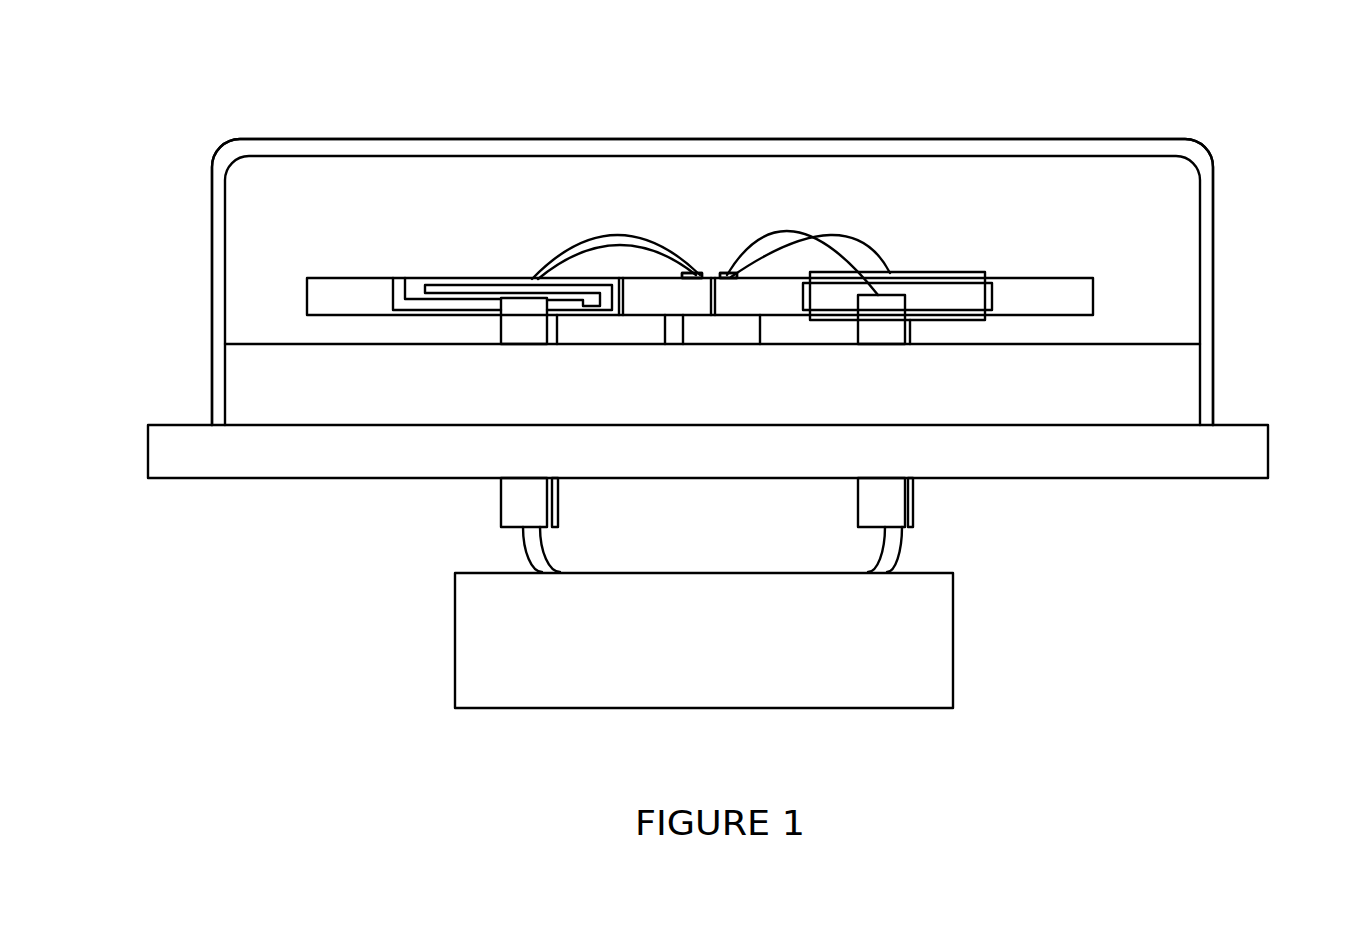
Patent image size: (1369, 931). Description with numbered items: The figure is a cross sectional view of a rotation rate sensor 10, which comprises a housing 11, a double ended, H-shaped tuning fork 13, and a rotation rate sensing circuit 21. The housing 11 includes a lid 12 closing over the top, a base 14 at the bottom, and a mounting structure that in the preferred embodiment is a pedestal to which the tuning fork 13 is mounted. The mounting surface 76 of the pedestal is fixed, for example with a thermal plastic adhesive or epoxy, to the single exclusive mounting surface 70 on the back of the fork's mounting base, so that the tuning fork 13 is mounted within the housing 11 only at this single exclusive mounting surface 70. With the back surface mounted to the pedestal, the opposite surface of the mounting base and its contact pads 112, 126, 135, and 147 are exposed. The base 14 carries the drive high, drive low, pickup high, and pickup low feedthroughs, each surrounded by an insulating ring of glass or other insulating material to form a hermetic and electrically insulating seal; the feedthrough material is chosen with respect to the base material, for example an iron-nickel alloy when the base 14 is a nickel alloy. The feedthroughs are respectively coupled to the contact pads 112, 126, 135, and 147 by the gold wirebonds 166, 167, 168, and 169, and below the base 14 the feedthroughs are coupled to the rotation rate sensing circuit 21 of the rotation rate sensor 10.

The rotation rate sensor 10 is at (100, 164).
The housing 11 is at (1215, 357).
The lid 12 is at (388, 152).
The tuning fork 13 is at (1070, 276).
The base 14 is at (255, 370).
The rotation rate sensing circuit 21 is at (953, 601).
The single exclusive mounting surface 70 is at (712, 277).
The mounting surface 76 is at (683, 345).
The contact pad 112 is at (733, 274).
The contact pad 126 is at (700, 275).
The contact pad 135 is at (684, 274).
The contact pad 147 is at (721, 275).
The wirebond 166 is at (800, 222).
The wirebond 167 is at (643, 237).
The wirebond 168 is at (618, 247).
The wirebond 169 is at (813, 233).